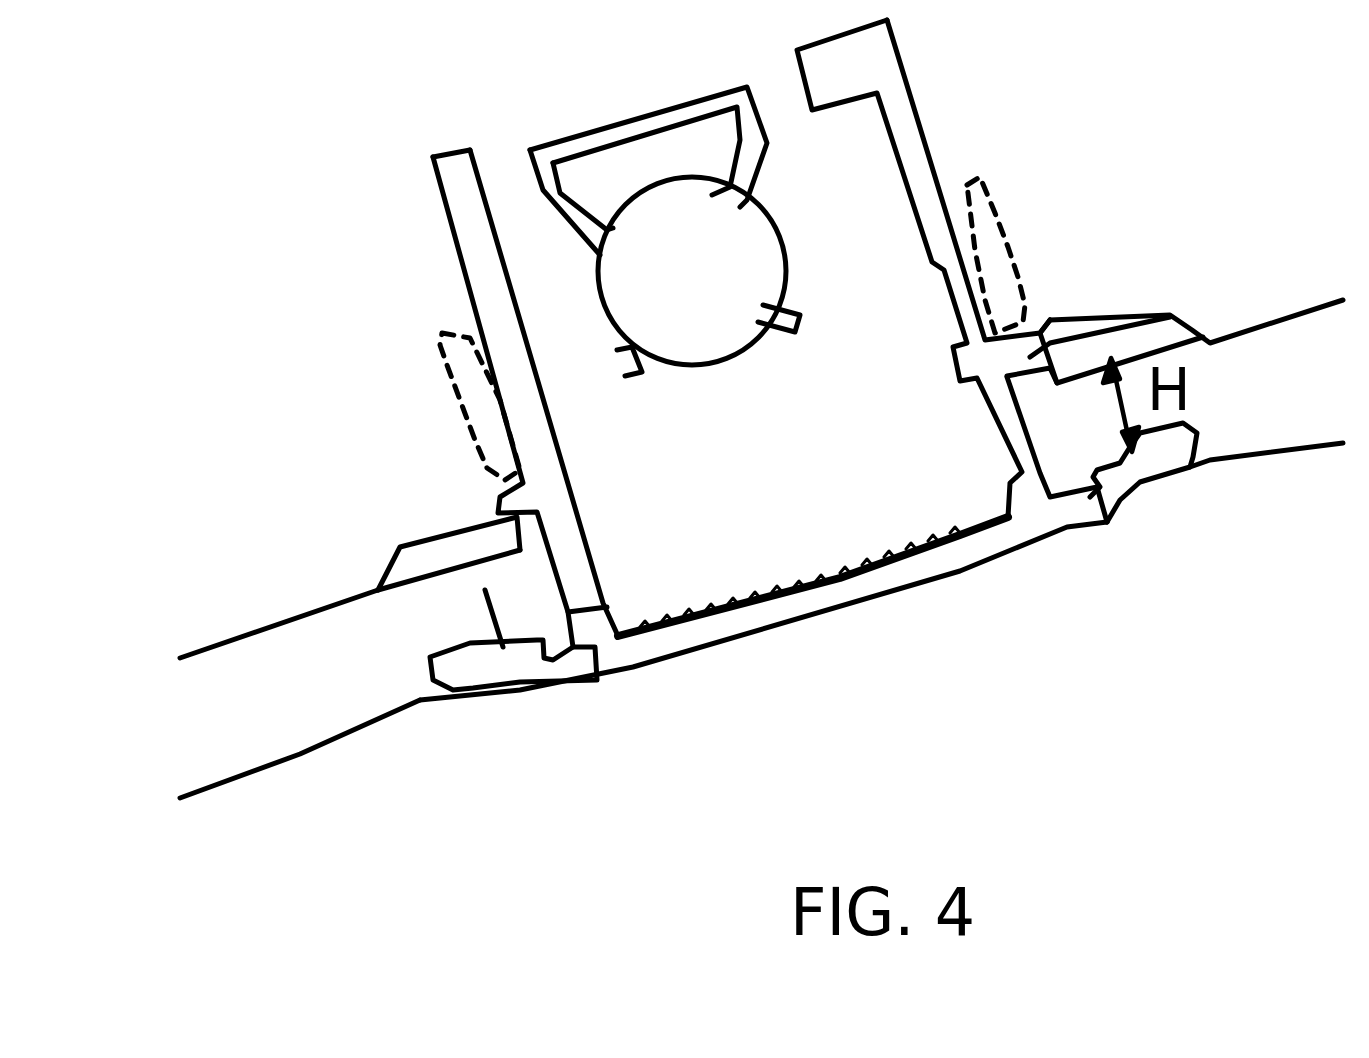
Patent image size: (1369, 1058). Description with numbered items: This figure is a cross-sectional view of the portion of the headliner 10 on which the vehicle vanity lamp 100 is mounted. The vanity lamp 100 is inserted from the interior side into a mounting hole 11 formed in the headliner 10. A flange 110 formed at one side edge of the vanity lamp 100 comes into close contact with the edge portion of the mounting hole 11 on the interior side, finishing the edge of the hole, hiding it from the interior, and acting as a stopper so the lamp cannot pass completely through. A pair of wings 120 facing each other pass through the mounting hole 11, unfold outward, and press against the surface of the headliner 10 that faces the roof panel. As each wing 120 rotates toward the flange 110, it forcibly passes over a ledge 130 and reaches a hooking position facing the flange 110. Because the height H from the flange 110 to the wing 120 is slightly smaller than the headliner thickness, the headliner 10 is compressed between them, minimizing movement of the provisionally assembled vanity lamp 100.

The vehicle vanity lamp 100 is at (910, 110).
The headliner 10 is at (292, 700).
The mounting hole 11 is at (557, 618).
The flange 110 is at (512, 687).
The wing 120 is at (403, 548).
The ledge 130 is at (483, 462).